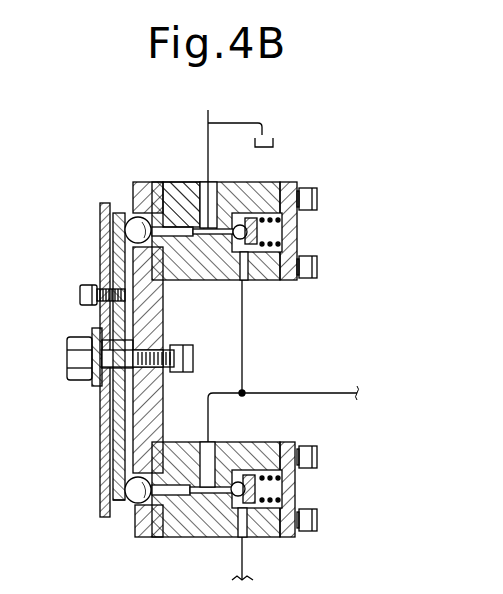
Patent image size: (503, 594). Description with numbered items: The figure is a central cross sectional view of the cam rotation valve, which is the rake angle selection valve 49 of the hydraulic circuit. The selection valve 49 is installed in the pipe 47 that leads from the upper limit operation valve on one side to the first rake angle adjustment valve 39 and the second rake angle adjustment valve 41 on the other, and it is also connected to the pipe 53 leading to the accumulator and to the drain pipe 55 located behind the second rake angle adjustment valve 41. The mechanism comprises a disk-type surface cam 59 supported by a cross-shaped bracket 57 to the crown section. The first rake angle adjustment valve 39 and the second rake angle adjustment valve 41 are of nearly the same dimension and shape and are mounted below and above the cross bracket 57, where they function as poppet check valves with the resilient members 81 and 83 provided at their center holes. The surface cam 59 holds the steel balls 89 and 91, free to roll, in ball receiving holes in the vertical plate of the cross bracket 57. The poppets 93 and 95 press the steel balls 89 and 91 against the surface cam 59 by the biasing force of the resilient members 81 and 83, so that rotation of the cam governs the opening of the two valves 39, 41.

The first rake angle adjustment valve 39 is at (306, 490).
The second rake angle adjustment valve 41 is at (306, 242).
The pipe 47 is at (287, 383).
The rake angle selection valve 49 is at (85, 270).
The pipe 53 is at (243, 562).
The drain pipe 55 is at (232, 156).
The cross-shaped bracket 57 is at (150, 302).
The disk-type surface cam 59 is at (120, 446).
The resilient member 81 is at (288, 497).
The resilient member 83 is at (278, 182).
The steel ball 89 is at (132, 497).
The steel ball 91 is at (142, 222).
The poppet 93 is at (218, 497).
The poppet 95 is at (192, 212).